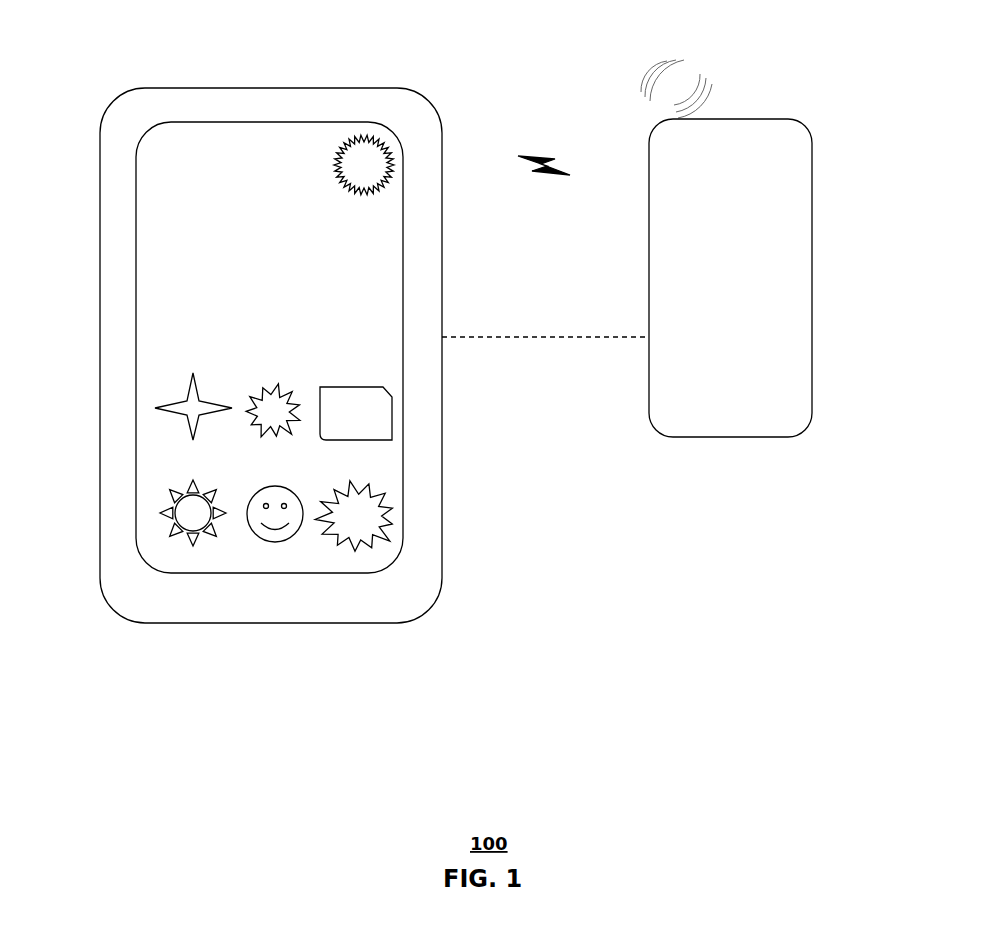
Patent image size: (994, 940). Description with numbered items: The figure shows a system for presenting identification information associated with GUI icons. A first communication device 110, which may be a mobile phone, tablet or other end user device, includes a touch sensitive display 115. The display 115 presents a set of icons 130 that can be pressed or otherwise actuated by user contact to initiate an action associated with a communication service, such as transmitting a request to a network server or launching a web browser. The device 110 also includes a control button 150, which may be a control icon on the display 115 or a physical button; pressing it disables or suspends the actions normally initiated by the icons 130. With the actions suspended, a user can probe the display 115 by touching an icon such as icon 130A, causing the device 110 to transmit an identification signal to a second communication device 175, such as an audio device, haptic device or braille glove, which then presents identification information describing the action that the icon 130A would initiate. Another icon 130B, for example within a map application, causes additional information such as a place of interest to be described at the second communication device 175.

The first communication device 110 is at (205, 88).
The touch sensitive display 115 is at (248, 192).
The icons 130 is at (208, 539).
The icon 130A is at (200, 518).
The icon 130B is at (273, 518).
The control button 150 is at (365, 163).
The second communication device 175 is at (790, 122).